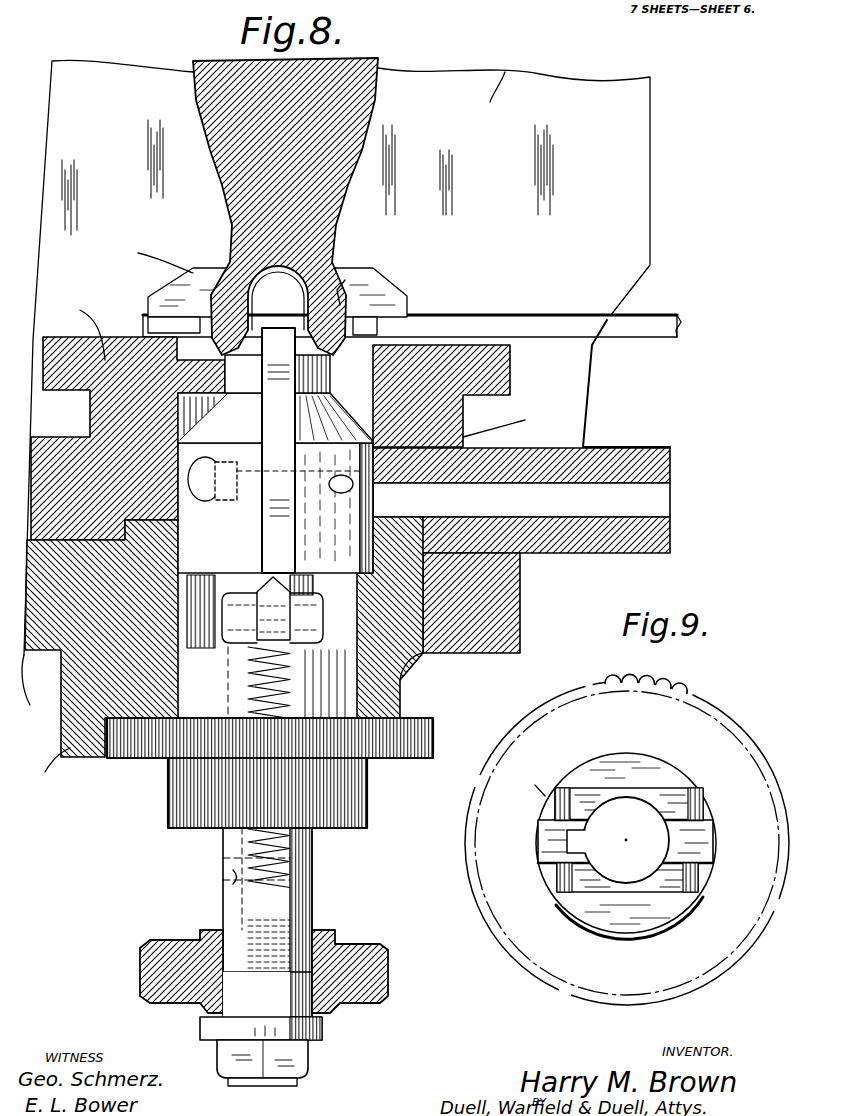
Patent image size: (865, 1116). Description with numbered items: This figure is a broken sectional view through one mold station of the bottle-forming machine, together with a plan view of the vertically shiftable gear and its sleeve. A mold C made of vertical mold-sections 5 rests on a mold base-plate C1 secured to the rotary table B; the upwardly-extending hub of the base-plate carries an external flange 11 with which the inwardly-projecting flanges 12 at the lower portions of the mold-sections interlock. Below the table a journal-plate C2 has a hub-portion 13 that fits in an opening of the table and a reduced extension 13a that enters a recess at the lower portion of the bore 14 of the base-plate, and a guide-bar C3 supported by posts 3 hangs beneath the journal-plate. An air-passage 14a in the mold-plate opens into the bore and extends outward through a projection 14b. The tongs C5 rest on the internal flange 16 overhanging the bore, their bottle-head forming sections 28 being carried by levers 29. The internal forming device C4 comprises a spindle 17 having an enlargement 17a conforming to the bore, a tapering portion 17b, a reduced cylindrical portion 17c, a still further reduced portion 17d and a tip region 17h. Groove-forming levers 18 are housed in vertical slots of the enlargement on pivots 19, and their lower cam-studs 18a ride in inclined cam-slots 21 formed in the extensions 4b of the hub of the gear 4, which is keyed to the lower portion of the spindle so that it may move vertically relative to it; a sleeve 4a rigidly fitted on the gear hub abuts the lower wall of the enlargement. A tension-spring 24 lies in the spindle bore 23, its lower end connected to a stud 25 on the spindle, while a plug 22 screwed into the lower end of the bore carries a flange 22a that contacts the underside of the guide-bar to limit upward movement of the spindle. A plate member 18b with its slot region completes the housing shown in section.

In FIG. 8, the vertical mold-section 5 is at (585, 85).
In FIG. 8, the mold C is at (501, 70).
In FIG. 8, the tong lever 29 is at (648, 334).
In FIG. 8, the external flange 11 is at (580, 366).
In FIG. 8, the wedge plate 18b is at (460, 307).
In FIG. 8, the tongs C5 is at (160, 250).
In FIG. 8, the inwardly-projecting flange 12 is at (88, 410).
In FIG. 8, the mold base-plate C1 is at (78, 325).
In FIG. 8, the rotary table B is at (100, 638).
In FIG. 8, the journal-plate C2 is at (47, 772).
In FIG. 8, the bore 14 is at (385, 462).
In FIG. 8, the internal forming device C4 is at (513, 418).
In FIG. 8, the projection 14b is at (622, 454).
In FIG. 8, the air-passage 14a is at (568, 507).
In FIG. 8, the reduced extension 13a is at (402, 533).
In FIG. 8, the hub-portion 13 is at (427, 631).
In FIG. 8, the extension 4b is at (425, 618).
In FIG. 9, the extension 4b is at (657, 802).
In FIG. 8, the bottle-head forming section 28 is at (340, 313).
In FIG. 8, the slot 17h is at (278, 301).
In FIG. 8, the still further reduced cylindrical portion 17d is at (335, 348).
In FIG. 8, the tapering portion 17b is at (275, 483).
In FIG. 8, the internal flange 16 is at (333, 418).
In FIG. 8, the reduced cylindrical portion 17c is at (277, 374).
In FIG. 8, the spindle 17 is at (312, 872).
In FIG. 8, the pivot 19 is at (257, 485).
In FIG. 8, the groove-forming lever 18 is at (278, 505).
In FIG. 8, the enlargement 17a is at (247, 585).
In FIG. 8, the cam-stud 18a is at (255, 634).
In FIG. 8, the tension-spring 24 is at (310, 843).
In FIG. 8, the gear 4 is at (433, 733).
In FIG. 9, the gear 4 is at (532, 708).
In FIG. 8, the sleeve 4a is at (140, 733).
In FIG. 8, the bore 23 is at (317, 906).
In FIG. 8, the stud 25 is at (220, 873).
In FIG. 8, the guide-bar C3 is at (163, 953).
In FIG. 8, the plug 22 is at (240, 995).
In FIG. 8, the flange 22a is at (323, 1028).
In FIG. 8, the post 3 is at (300, 1078).
In FIG. 9, the inclined cam-slot 21 is at (553, 868).